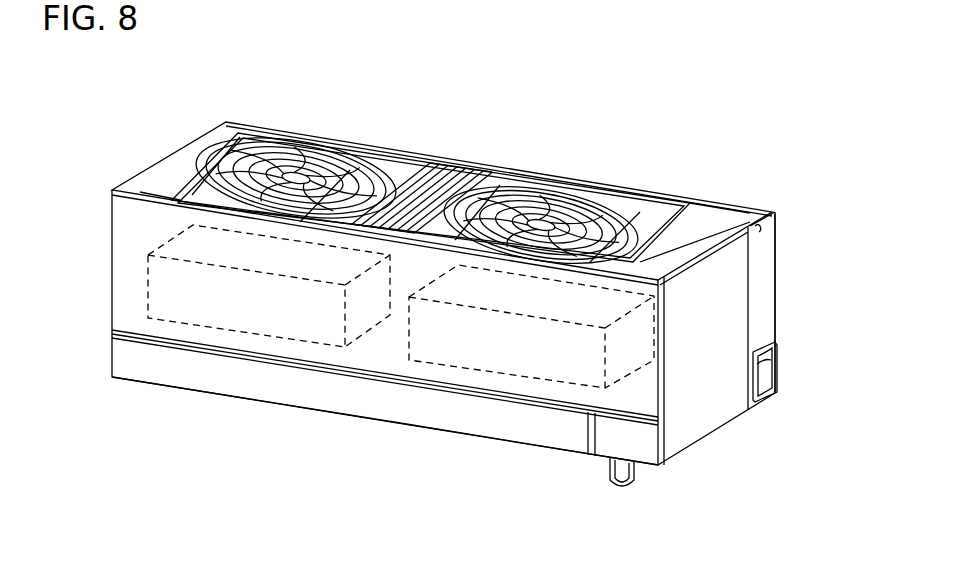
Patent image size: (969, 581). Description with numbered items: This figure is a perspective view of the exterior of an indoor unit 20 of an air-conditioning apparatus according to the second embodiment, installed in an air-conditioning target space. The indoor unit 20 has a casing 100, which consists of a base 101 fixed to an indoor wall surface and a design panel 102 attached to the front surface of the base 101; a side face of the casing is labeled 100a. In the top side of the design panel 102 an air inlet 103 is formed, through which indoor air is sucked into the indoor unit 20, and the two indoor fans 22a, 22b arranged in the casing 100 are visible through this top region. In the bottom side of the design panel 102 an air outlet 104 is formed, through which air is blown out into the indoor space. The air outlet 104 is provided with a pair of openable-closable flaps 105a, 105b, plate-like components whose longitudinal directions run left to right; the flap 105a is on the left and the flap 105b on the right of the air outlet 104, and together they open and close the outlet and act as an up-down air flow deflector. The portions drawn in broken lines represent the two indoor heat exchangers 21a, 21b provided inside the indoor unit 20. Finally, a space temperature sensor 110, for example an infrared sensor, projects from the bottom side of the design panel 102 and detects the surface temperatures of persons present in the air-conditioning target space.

The indoor unit 20 is at (724, 130).
The indoor fan 22a is at (347, 178).
The indoor fan 22b is at (597, 217).
The air inlet 103 is at (557, 200).
The casing 100 is at (730, 199).
The base 101 is at (766, 243).
The side plate 100a is at (768, 284).
The design panel 102 is at (723, 382).
The indoor heat exchanger 21a is at (148, 278).
The indoor heat exchanger 21b is at (632, 373).
The air outlet 104 is at (372, 450).
The flap 105a is at (218, 422).
The flap 105b is at (521, 462).
The space temperature sensor 110 is at (636, 478).